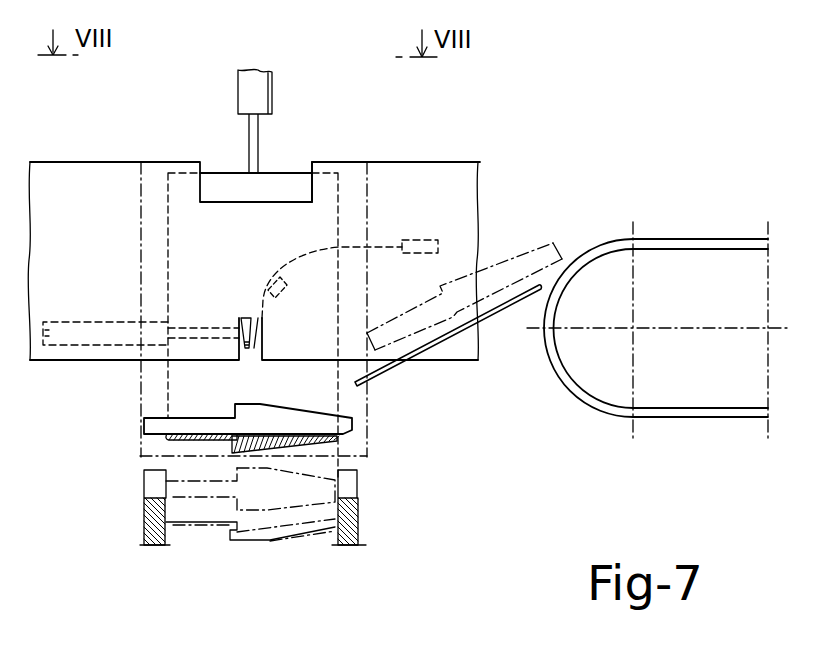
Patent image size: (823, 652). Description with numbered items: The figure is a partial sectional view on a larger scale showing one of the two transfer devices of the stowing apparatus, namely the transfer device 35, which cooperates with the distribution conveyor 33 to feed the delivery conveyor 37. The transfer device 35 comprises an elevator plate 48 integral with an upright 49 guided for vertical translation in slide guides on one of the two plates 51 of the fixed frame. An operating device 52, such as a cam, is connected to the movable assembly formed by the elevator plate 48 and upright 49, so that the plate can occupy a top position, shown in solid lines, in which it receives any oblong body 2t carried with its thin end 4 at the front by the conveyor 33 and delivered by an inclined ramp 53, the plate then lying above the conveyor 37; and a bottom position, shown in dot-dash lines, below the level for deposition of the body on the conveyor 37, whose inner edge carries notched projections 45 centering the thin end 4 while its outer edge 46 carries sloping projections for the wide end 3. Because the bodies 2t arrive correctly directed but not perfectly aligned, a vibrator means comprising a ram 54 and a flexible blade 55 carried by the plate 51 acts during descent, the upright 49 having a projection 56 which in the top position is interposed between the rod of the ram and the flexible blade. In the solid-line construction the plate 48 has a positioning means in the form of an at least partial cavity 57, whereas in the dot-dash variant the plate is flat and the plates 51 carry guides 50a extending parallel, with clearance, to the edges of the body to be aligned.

The oblong body 2t is at (501, 266).
The wide end 3 is at (294, 484).
The thin end 4 is at (182, 488).
The distribution conveyor 33 is at (708, 240).
The transfer device 35 is at (494, 195).
The delivery conveyor 37 is at (351, 554).
The notched projections 45 is at (146, 524).
The outer edge 46 is at (360, 527).
The elevator plate 48 is at (177, 442).
The upright 49 is at (338, 392).
The guide 50a is at (138, 398).
The plate 51 is at (402, 172).
The operating device 52 is at (260, 90).
The inclined ramp 53 is at (489, 313).
The ram 54 is at (125, 321).
The flexible blade 55 is at (262, 300).
The projection 56 is at (241, 317).
The cavity 57 is at (254, 441).